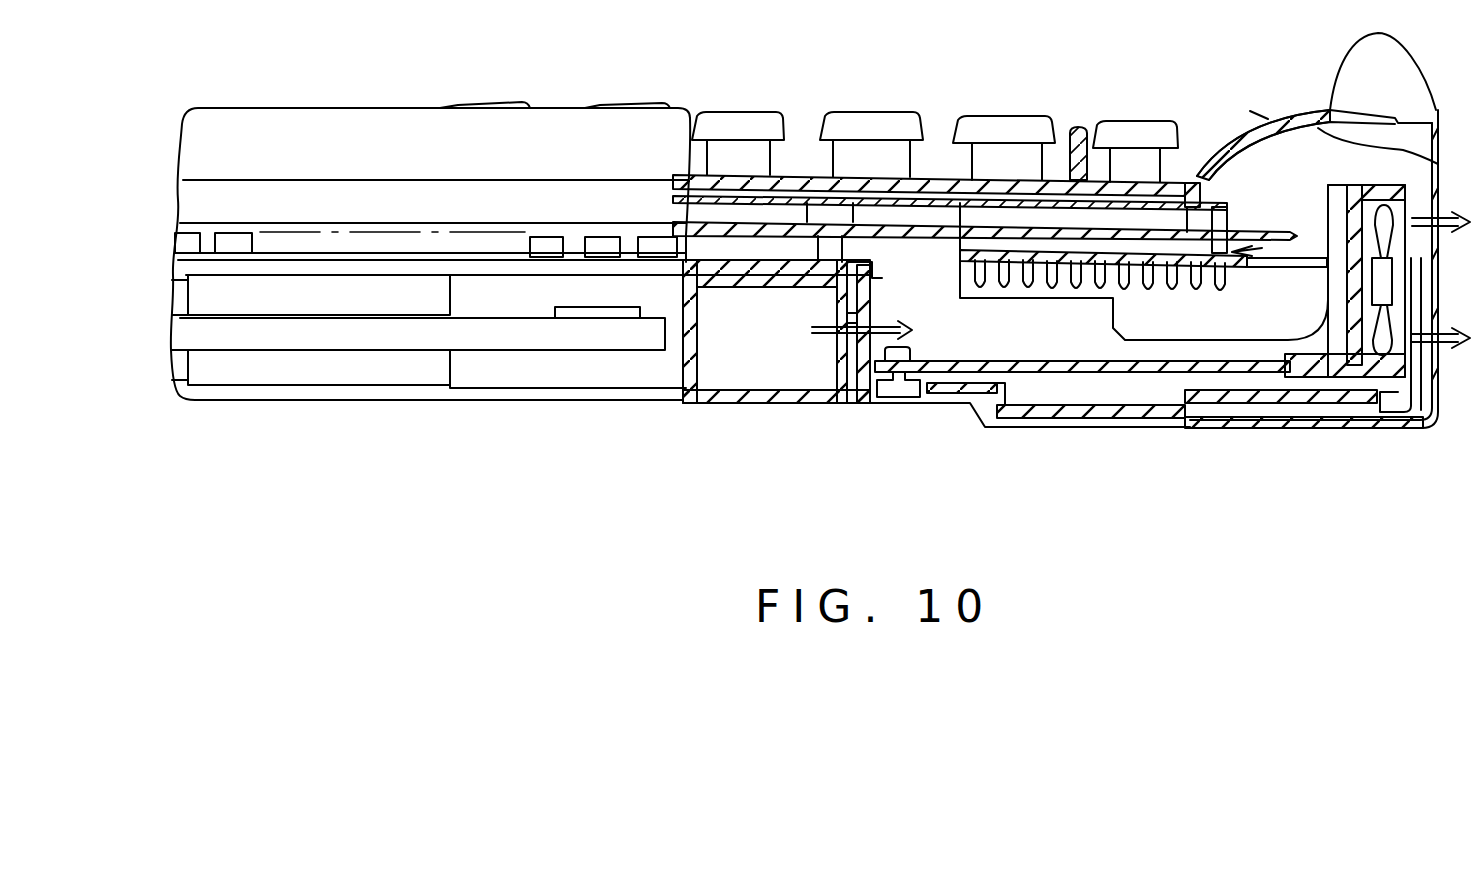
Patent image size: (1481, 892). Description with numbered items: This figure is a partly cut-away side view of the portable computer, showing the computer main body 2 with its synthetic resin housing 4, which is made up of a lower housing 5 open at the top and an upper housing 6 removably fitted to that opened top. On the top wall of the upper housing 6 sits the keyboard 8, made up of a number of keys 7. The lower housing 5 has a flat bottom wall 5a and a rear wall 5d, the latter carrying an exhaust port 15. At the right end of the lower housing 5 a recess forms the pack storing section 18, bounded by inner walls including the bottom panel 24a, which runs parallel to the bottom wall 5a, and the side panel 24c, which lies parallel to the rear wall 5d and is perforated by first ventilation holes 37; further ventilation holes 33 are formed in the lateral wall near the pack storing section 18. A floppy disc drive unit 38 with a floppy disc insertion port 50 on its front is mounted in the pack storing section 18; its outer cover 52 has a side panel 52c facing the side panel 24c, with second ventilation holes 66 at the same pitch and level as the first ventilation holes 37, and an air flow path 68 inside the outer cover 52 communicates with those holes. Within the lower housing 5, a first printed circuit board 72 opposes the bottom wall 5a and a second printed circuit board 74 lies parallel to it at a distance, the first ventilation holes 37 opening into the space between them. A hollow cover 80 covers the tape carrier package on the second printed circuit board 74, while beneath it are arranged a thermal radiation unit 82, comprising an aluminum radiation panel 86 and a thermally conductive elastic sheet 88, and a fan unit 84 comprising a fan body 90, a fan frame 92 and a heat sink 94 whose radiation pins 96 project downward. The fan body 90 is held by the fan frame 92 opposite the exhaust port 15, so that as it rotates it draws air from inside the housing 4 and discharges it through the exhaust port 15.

The computer main body 2 is at (618, 98).
The housing 4 is at (440, 53).
The lower housing 5 is at (378, 190).
The upper housing 6 is at (412, 130).
The keys 7 is at (995, 128).
The keyboard 8 is at (742, 102).
The exhaust port 15 is at (1441, 215).
The pack storing section 18 is at (855, 392).
The bottom panel 24a is at (733, 298).
The side panel 24c is at (877, 263).
The ventilation holes 33 is at (232, 245).
The first ventilation holes 37 is at (874, 313).
The floppy disc drive unit 38 is at (470, 392).
The floppy disc insertion port 50 is at (540, 345).
The outer cover 52 is at (700, 402).
The side panel 52c is at (840, 365).
The second ventilation holes 66 is at (835, 318).
The air flow path 68 is at (735, 378).
The first printed circuit board 72 is at (1060, 368).
The second printed circuit board 74 is at (890, 220).
The cover 80 is at (1218, 222).
The thermal radiation unit 82 is at (1265, 235).
The fan unit 84 is at (1326, 170).
The radiation panel 86 is at (1200, 285).
The elastic sheet 88 is at (1165, 290).
The fan body 90 is at (1370, 378).
The fan frame 92 is at (1325, 340).
The heat sink 94 is at (1035, 285).
The radiation pins 96 is at (1000, 285).
The bottom wall 5a is at (1130, 420).
The rear wall 5d is at (1440, 405).